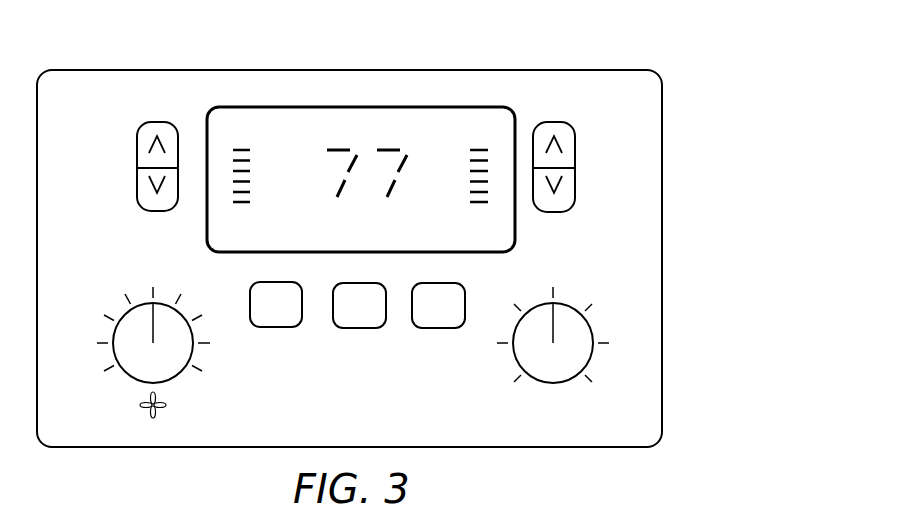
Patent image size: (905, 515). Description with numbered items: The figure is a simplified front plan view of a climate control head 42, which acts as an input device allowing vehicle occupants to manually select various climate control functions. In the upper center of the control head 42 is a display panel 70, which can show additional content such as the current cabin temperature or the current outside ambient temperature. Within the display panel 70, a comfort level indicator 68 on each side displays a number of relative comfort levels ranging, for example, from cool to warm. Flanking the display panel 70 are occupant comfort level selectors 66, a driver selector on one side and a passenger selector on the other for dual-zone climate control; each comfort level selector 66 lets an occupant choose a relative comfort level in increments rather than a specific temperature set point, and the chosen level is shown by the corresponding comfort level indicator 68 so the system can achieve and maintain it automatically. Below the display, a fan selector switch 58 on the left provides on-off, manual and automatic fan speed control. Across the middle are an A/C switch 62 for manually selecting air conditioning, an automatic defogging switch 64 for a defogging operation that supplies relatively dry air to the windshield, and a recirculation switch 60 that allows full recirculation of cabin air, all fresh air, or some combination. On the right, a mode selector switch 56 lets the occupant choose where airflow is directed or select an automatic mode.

The climate control head 42 is at (664, 130).
The display panel 70 is at (305, 104).
The comfort level indicator 68 is at (220, 140).
The occupant comfort level selector 66 is at (137, 153).
The fan selector switch 58 is at (176, 372).
The A/C switch 62 is at (280, 327).
The automatic defogging switch 64 is at (354, 328).
The recirculation switch 60 is at (423, 322).
The mode selector switch 56 is at (585, 357).